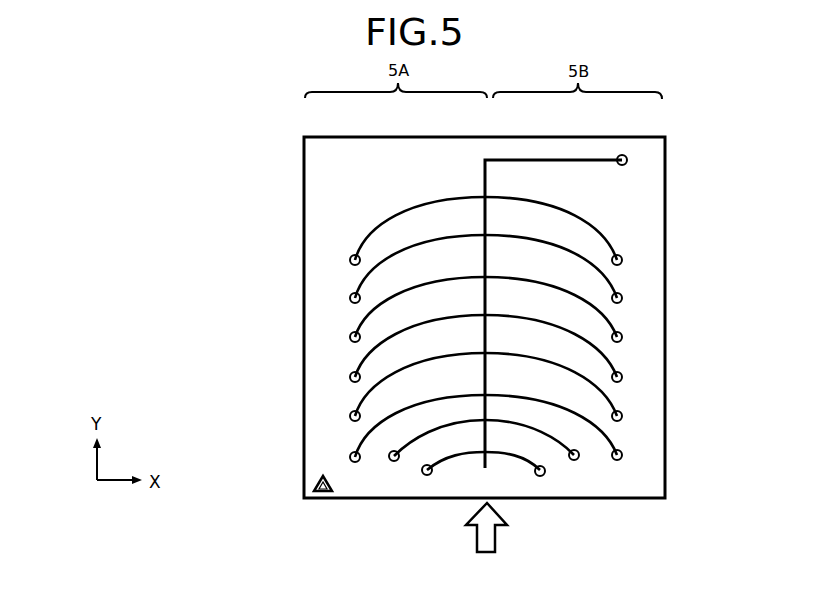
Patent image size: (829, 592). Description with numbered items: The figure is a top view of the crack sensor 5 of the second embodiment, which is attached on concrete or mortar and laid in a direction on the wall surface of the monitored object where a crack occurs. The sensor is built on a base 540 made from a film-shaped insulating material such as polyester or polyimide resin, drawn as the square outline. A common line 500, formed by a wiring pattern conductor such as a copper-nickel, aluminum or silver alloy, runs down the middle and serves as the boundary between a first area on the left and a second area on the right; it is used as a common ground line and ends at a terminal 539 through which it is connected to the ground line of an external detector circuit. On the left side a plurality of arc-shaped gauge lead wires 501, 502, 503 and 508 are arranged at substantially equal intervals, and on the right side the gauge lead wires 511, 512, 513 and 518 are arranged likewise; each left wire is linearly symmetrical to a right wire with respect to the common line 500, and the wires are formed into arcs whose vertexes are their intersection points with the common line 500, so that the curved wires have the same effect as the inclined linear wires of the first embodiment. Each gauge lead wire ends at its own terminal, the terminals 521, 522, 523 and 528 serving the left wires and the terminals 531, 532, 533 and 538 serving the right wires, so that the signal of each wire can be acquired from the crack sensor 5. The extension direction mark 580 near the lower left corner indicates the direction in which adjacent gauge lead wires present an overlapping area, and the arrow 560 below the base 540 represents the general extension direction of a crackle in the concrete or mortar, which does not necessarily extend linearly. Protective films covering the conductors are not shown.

The crack sensor 5 is at (484, 297).
The common line 500 is at (505, 160).
The gauge lead wire 501 is at (464, 456).
The gauge lead wire 502 is at (428, 432).
The gauge lead wire 503 is at (364, 437).
The gauge lead wire 508 is at (378, 225).
The gauge lead wire 511 is at (503, 456).
The gauge lead wire 512 is at (546, 434).
The gauge lead wire 513 is at (600, 428).
The gauge lead wire 518 is at (595, 212).
The terminal 521 is at (426, 475).
The terminal 522 is at (389, 461).
The terminal 523 is at (351, 456).
The terminal 528 is at (350, 258).
The terminal 531 is at (541, 477).
The terminal 532 is at (576, 459).
The terminal 533 is at (622, 452).
The terminal 538 is at (622, 260).
The terminal 539 is at (622, 156).
The base 540 is at (455, 150).
The arrow 560 is at (477, 541).
The extension direction mark 580 is at (319, 481).